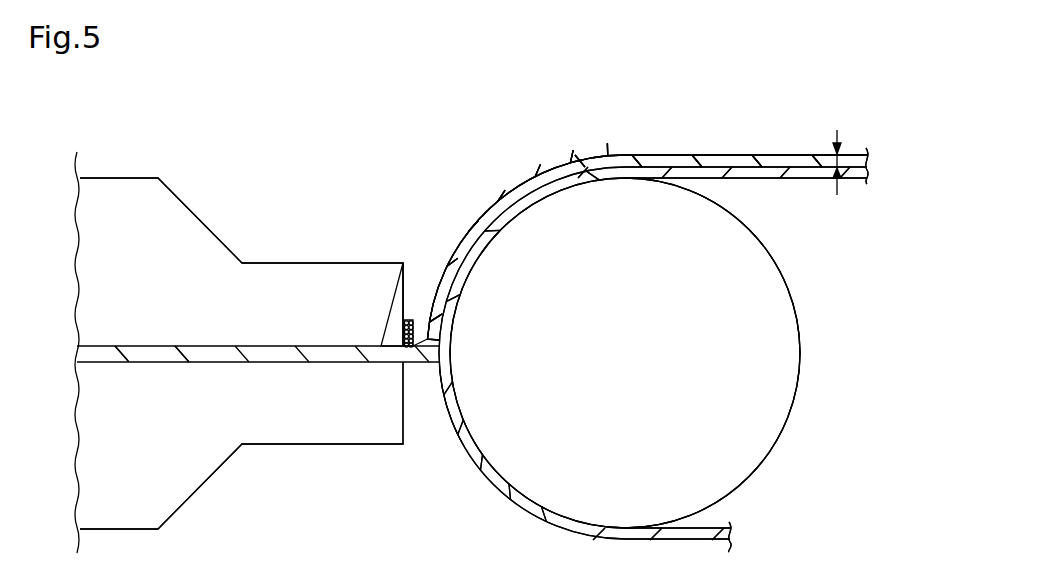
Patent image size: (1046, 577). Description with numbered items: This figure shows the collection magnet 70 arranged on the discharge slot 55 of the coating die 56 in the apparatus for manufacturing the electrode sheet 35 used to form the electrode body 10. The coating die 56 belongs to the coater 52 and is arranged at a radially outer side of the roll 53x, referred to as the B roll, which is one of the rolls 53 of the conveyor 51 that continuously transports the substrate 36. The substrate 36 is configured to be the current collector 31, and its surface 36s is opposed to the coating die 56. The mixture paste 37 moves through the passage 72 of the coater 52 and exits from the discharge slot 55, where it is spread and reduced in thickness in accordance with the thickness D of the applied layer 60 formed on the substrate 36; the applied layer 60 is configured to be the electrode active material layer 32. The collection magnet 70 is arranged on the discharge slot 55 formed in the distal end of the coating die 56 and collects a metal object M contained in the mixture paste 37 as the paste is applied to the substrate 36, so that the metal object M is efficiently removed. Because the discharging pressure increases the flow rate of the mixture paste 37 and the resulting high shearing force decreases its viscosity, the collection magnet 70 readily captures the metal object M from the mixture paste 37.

The coating die 56 is at (160, 178).
The coater 52 is at (241, 353).
The discharge slot 55 is at (382, 362).
The passage 72 is at (155, 362).
The collection magnet 70 is at (387, 305).
The metal object M is at (419, 322).
The rolls 53 is at (762, 463).
The roll 53x is at (625, 353).
The conveyor 51 is at (625, 353).
The substrate 36 is at (761, 178).
The current collector 31 is at (653, 350).
The surface of the substrate 36s is at (432, 386).
The applied layer 60 is at (668, 157).
The mixture paste 37 is at (648, 241).
The electrode active material layer 32 is at (648, 241).
The electrode sheet 35 is at (467, 191).
The electrode body 10 is at (648, 241).
The thickness of the applied layer D is at (840, 163).